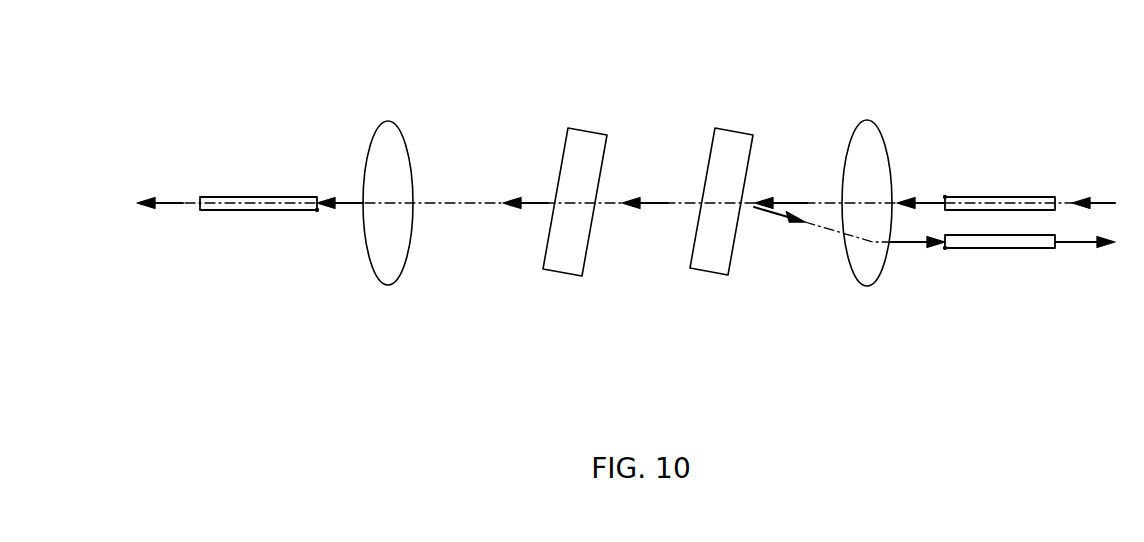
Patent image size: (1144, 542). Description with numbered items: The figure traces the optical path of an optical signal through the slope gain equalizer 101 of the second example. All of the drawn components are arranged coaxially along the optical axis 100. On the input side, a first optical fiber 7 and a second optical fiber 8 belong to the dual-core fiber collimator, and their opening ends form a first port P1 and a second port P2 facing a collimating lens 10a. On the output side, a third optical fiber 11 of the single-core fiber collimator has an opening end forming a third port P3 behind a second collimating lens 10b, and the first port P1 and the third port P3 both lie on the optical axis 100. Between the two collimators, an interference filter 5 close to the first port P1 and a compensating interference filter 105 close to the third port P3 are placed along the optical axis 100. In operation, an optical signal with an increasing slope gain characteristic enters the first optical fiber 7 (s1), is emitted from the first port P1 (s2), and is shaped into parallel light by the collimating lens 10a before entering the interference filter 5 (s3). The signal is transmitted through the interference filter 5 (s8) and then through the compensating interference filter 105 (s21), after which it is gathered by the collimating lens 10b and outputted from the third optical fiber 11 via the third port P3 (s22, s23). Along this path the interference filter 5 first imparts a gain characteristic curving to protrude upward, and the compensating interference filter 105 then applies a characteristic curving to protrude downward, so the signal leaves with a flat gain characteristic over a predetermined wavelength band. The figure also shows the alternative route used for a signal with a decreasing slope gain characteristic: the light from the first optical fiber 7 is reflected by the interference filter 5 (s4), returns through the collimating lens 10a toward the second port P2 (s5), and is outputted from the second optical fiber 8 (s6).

The slope gain equalizer 101 is at (626, 200).
The compensating interference filter 105 is at (582, 142).
The interference filter 5 is at (737, 145).
The first optical fiber 7 is at (1022, 197).
The second optical fiber 8 is at (1013, 248).
The third optical fiber 11 is at (246, 210).
The collimating lens 10a is at (868, 270).
The collimating lens 10b is at (387, 270).
The optical axis 100 is at (488, 205).
The first port P1 is at (940, 196).
The second port P2 is at (938, 250).
The third port P3 is at (322, 212).
The optical signal inputted to first optical fiber s1 is at (1093, 190).
The optical signal emitted from first port s2 is at (921, 217).
The parallel light entering interference filter s3 is at (781, 190).
The optical signal reflected by interference filter s4 is at (779, 226).
The reflected light toward second port s5 is at (917, 256).
The optical signal outputted from second optical fiber s6 is at (1085, 256).
The optical signal transmitted through interference filter s8 is at (645, 190).
The optical signal transmitted through compensating interference filter s21 is at (526, 190).
The optical signal entering third port s22 is at (340, 190).
The optical signal outputted from third optical fiber s23 is at (161, 190).